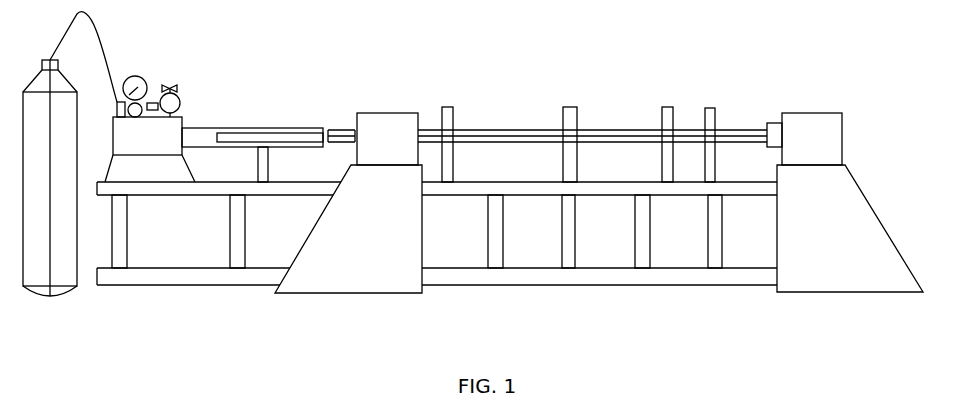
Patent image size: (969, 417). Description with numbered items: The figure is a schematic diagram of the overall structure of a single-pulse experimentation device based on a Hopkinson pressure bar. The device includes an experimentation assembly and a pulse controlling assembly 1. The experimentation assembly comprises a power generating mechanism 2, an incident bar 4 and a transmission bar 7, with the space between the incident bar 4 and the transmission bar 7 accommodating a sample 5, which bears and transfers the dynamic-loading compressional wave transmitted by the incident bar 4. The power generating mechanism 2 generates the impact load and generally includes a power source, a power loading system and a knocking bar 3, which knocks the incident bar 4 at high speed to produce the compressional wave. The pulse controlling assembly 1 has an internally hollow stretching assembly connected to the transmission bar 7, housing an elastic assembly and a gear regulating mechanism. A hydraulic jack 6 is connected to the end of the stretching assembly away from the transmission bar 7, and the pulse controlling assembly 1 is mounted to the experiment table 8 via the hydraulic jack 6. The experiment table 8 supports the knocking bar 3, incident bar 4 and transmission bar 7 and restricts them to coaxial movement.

The pulse controlling assembly 1 is at (755, 128).
The power generating mechanism 2 is at (148, 135).
The knocking bar 3 is at (283, 138).
The incident bar 4 is at (483, 133).
The sample 5 is at (610, 133).
The hydraulic jack 6 is at (777, 135).
The transmission bar 7 is at (680, 135).
The experiment table 8 is at (410, 223).